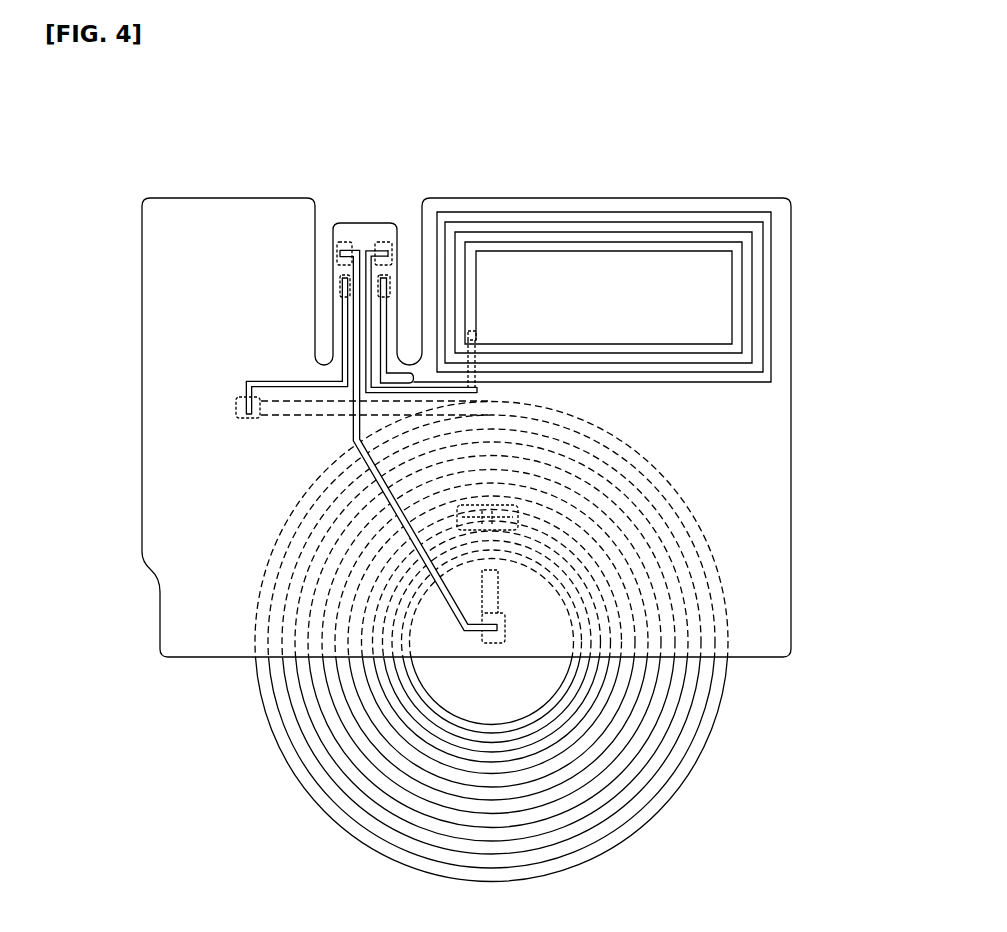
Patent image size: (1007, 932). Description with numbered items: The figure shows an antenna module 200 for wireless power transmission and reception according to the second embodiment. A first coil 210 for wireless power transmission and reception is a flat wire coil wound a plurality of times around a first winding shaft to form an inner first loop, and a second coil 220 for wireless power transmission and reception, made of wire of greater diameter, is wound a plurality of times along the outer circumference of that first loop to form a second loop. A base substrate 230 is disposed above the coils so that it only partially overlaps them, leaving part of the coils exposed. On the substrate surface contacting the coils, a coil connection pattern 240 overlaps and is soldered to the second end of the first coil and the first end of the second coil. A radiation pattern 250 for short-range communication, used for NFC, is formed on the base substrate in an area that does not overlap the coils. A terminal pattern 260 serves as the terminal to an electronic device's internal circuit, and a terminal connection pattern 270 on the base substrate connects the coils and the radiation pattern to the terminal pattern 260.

The antenna module for wireless power transmission and reception 200 is at (170, 117).
The first coil for wireless power transmission and reception 210 is at (404, 695).
The second coil for wireless power transmission and reception 220 is at (720, 720).
The base substrate 230 is at (518, 517).
The coil connection pattern 240 is at (791, 445).
The radiation pattern for short-range communication 250 is at (772, 292).
The terminal pattern 260 is at (343, 242).
The terminal connection pattern 270 is at (243, 383).